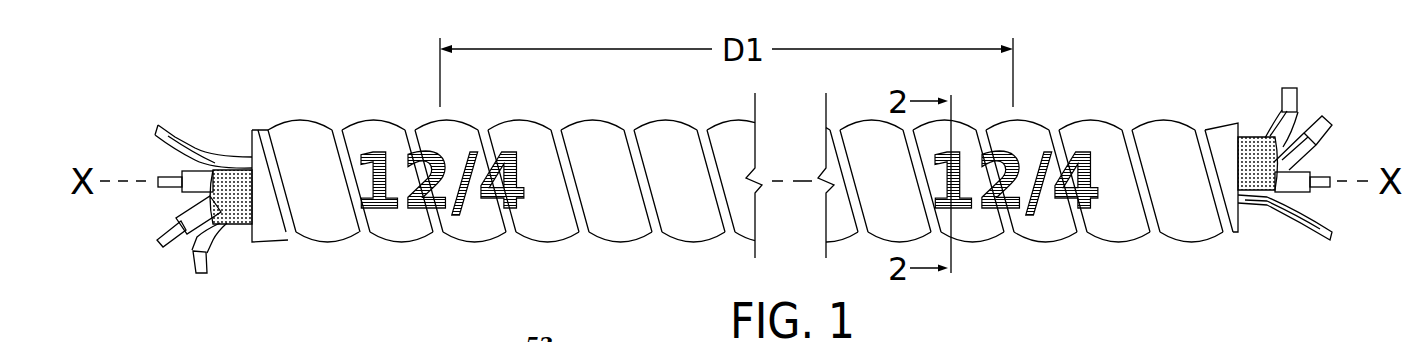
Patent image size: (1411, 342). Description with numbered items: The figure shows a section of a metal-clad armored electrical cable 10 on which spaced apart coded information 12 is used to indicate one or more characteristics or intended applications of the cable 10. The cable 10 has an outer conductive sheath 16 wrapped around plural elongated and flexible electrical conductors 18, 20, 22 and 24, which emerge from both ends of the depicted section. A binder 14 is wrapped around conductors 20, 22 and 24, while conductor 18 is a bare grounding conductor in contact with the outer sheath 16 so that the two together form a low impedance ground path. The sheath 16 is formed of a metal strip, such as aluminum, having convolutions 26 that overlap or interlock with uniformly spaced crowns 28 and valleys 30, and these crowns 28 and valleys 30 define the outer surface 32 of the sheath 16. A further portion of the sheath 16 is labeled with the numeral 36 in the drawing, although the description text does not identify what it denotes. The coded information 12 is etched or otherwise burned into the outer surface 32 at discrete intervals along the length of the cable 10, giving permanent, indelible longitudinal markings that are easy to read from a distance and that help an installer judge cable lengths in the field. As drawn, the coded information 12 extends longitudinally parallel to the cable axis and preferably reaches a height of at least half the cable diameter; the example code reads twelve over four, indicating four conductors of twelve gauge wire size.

The metal-clad armored electrical cable 10 is at (720, 179).
The coded information 12 is at (365, 269).
The binder 14 is at (232, 224).
The outer conductive sheath 16 is at (1183, 121).
The bare grounding conductor 18 is at (193, 146).
The electrical conductor 20 is at (183, 172).
The electrical conductor 22 is at (177, 208).
The electrical conductor 24 is at (191, 244).
The convolutions 26 is at (550, 115).
The crowns 28 is at (582, 127).
The valleys 30 is at (690, 128).
The outer surface 32 is at (1188, 222).
The jacket outer surface 36 is at (1123, 245).